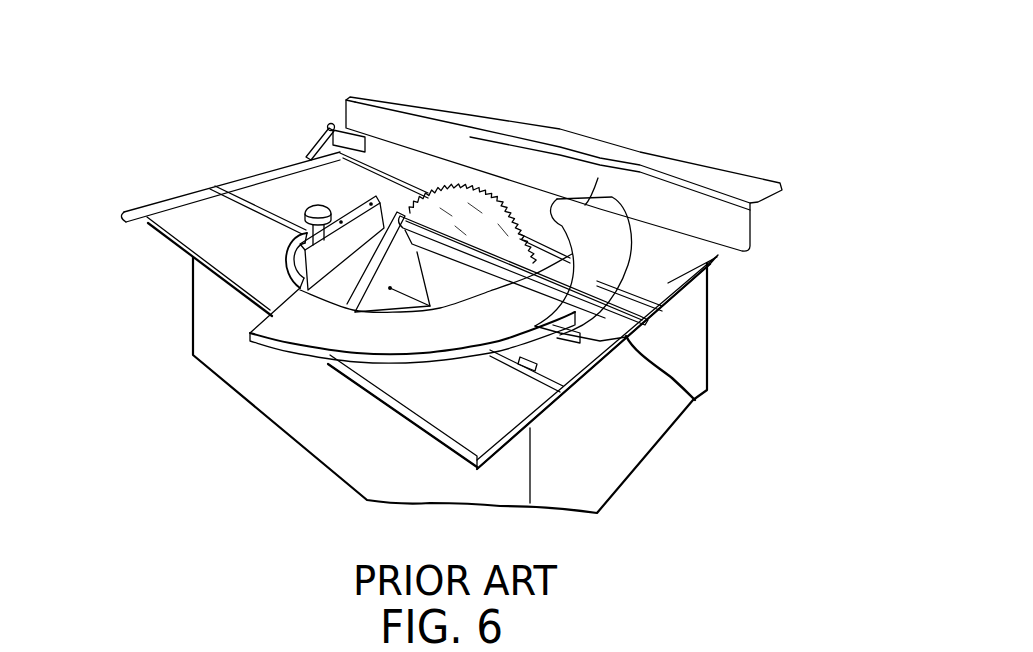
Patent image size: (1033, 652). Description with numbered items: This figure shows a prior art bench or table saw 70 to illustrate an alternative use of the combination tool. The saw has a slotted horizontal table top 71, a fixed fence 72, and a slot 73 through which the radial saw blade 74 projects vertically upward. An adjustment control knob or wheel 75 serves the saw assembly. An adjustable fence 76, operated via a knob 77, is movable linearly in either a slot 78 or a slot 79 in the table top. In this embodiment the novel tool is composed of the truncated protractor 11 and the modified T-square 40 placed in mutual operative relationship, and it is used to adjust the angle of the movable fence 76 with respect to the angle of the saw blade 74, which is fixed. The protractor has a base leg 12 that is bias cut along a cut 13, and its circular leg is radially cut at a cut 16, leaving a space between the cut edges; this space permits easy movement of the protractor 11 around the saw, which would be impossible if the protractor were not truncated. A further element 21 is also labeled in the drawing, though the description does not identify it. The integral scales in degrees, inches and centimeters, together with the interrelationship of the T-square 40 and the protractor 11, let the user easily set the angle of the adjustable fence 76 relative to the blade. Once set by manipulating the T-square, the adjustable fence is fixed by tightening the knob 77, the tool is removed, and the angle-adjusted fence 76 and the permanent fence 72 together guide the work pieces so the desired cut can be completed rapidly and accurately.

The truncated protractor 11 is at (303, 337).
The base leg 12 is at (331, 309).
The bias cut 13 is at (405, 238).
The radial cut 16 is at (600, 208).
The splitter 21 is at (600, 200).
The modified T-square 40 is at (690, 397).
The table saw 70 is at (695, 343).
The slotted horizontal table top 71 is at (203, 233).
The fixed fence 72 is at (382, 120).
The slot 73 is at (477, 263).
The radial saw blade 74 is at (563, 212).
The adjustment control knob 75 is at (313, 140).
The adjustable fence 76 is at (290, 272).
The knob 77 is at (320, 207).
The slot 78 is at (243, 197).
The slot 79 is at (402, 185).